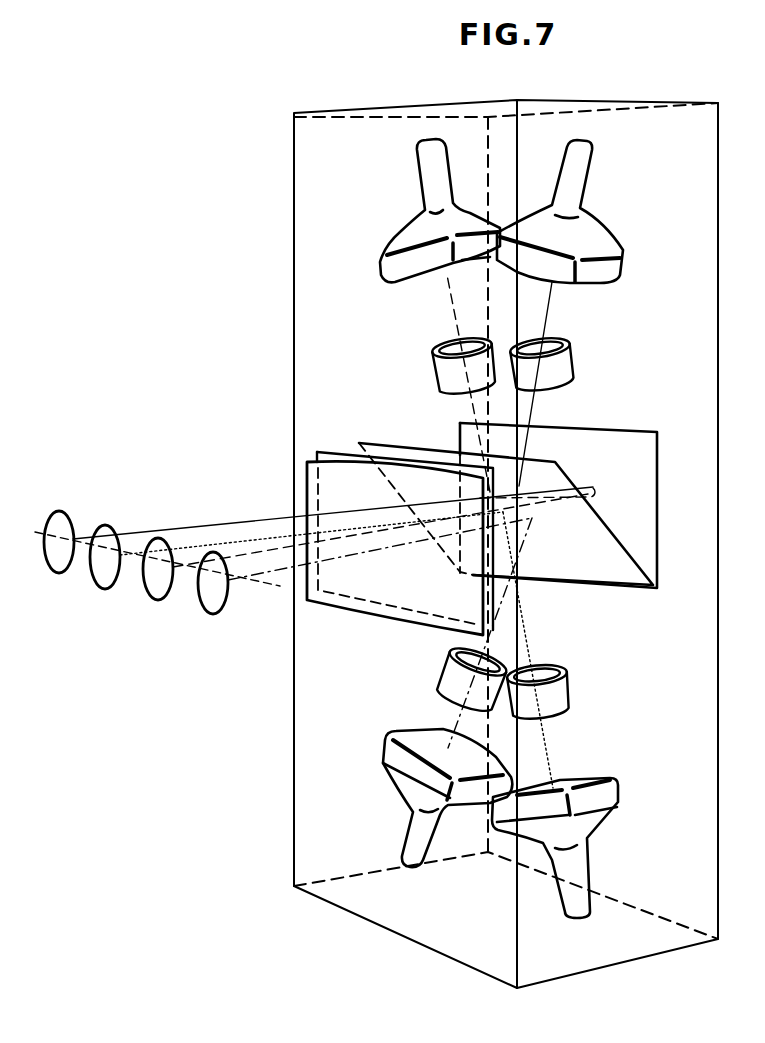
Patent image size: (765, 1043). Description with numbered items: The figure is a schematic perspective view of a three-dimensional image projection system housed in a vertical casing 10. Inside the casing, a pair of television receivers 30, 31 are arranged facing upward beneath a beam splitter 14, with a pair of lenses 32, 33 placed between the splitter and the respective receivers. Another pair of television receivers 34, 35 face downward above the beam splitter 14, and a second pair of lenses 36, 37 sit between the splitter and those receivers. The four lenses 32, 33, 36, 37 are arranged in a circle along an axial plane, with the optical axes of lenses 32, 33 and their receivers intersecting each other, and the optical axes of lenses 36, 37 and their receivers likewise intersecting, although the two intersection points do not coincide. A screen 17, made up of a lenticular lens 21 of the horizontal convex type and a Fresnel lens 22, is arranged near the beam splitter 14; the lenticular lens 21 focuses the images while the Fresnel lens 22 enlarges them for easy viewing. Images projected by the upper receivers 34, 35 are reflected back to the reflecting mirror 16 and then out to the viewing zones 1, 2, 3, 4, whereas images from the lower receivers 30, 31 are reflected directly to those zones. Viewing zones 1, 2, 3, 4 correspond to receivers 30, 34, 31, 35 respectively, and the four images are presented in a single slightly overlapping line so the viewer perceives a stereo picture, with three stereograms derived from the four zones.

The viewing zone 1 is at (213, 583).
The viewing zone 2 is at (158, 569).
The viewing zone 3 is at (105, 557).
The viewing zone 4 is at (59, 542).
The vertical casing 10 is at (292, 246).
The beam splitter 14 is at (577, 562).
The reflecting mirror 16 is at (647, 502).
The screen 17 is at (350, 554).
The lenticular lens 21 is at (317, 456).
The Fresnel lens 22 is at (307, 494).
The television receiver 30 is at (420, 850).
The television receiver 31 is at (578, 900).
The lens 32 is at (447, 680).
The lens 33 is at (558, 687).
The television receiver 34 is at (413, 235).
The television receiver 35 is at (585, 235).
The lens 36 is at (445, 378).
The lens 37 is at (567, 373).